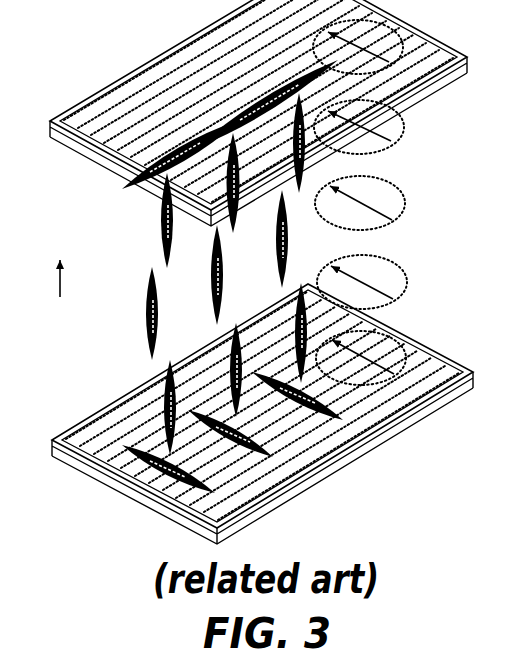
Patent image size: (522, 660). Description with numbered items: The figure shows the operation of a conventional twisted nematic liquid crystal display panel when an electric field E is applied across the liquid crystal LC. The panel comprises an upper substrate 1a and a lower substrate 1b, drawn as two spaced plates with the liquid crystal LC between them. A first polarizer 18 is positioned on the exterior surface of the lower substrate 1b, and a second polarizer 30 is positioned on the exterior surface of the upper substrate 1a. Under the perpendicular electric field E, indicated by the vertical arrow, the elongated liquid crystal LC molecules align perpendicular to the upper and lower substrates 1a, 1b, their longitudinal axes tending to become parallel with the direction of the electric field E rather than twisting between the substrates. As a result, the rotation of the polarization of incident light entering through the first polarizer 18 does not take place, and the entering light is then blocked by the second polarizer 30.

The upper substrate 1a is at (429, 97).
The lower substrate 1b is at (75, 422).
The second polarizer 30 is at (118, 79).
The first polarizer 18 is at (293, 497).
The liquid crystal LC is at (133, 217).
The electric field E is at (60, 294).